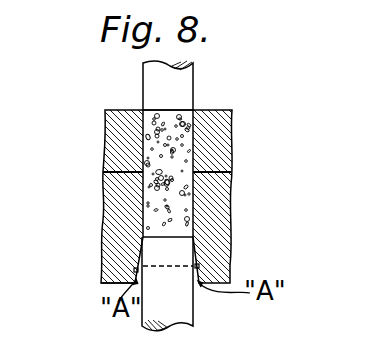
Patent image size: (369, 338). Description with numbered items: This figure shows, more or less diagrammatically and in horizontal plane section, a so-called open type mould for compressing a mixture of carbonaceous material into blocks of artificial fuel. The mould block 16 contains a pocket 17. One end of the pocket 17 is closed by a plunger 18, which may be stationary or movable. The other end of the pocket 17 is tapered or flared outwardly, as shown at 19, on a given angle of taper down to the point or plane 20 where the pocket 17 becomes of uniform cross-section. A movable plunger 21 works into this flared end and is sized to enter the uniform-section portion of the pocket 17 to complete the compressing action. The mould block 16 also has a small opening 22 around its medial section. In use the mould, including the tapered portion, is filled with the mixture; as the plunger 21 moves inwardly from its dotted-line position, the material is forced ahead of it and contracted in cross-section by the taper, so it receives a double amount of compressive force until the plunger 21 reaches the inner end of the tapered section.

The mould block 16 is at (228, 183).
The pocket 17 is at (146, 145).
The plunger 18 is at (172, 88).
The tapered or flared end 19 is at (134, 270).
The point or plane 20 is at (103, 240).
The movable plunger 21 is at (170, 312).
The small opening 22 is at (103, 172).